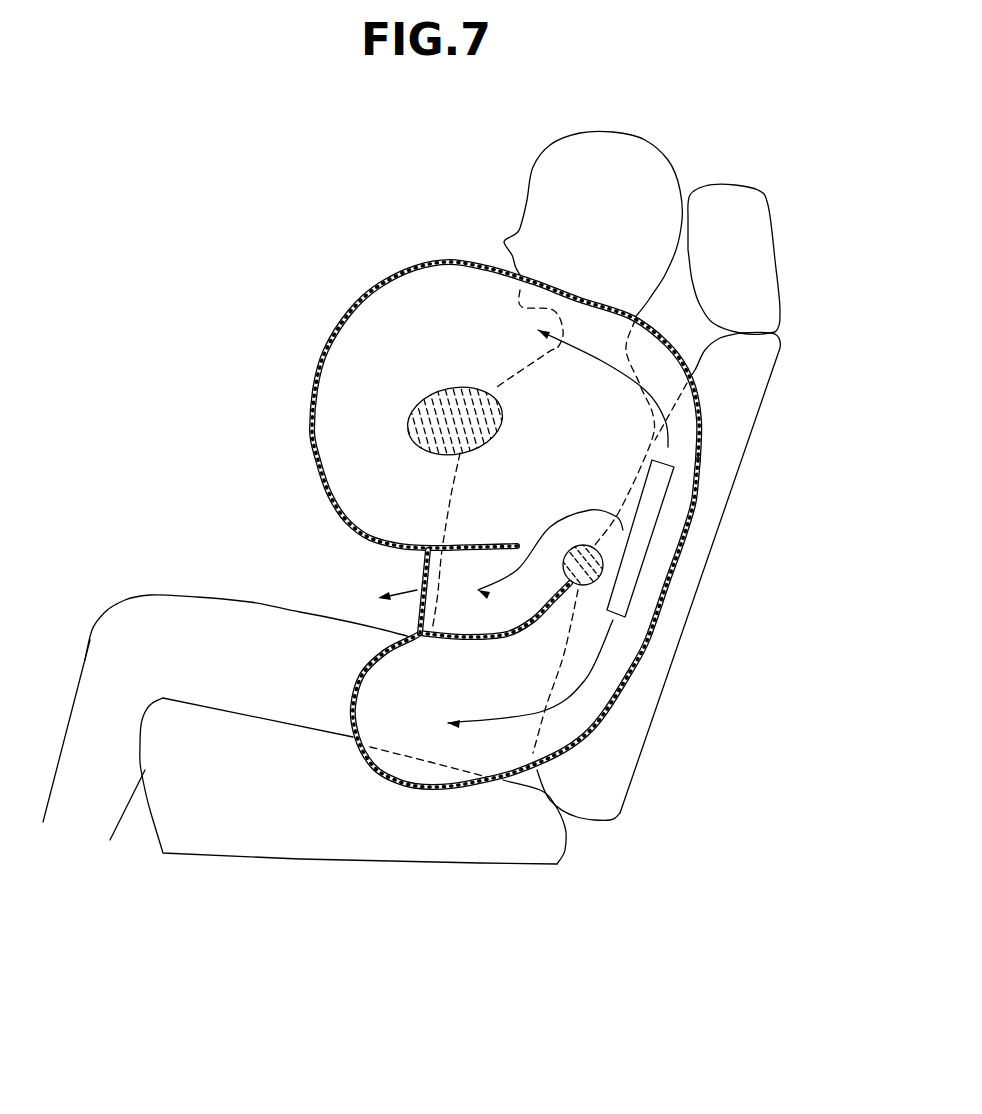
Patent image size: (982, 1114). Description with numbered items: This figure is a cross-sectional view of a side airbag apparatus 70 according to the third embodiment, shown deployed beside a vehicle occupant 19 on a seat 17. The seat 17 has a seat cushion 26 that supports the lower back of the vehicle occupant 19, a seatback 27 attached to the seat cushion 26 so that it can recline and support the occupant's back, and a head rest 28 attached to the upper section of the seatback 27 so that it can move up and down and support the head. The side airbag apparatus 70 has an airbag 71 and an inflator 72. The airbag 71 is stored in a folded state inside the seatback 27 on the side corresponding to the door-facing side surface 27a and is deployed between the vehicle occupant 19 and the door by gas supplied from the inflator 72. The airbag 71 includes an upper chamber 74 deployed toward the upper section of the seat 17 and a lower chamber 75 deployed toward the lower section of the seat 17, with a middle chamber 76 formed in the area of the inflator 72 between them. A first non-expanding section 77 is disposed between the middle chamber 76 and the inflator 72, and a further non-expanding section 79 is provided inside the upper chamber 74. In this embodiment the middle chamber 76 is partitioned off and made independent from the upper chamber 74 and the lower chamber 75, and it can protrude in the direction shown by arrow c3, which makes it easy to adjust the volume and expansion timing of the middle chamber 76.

The seat 17 is at (499, 499).
The vehicle occupant 19 is at (613, 130).
The seat cushion 26 is at (227, 837).
The seatback 27 is at (697, 576).
The door-facing side surface 27a is at (747, 417).
The head rest 28 is at (750, 230).
The side airbag apparatus 70 is at (459, 448).
The airbag 71 is at (410, 524).
The inflator 72 is at (668, 489).
The upper chamber 74 is at (345, 477).
The lower chamber 75 is at (377, 697).
The middle chamber 76 is at (400, 546).
The first non-expanding section 77 is at (603, 565).
The non-expanding section 79 is at (440, 405).
The arrow c3 is at (397, 582).